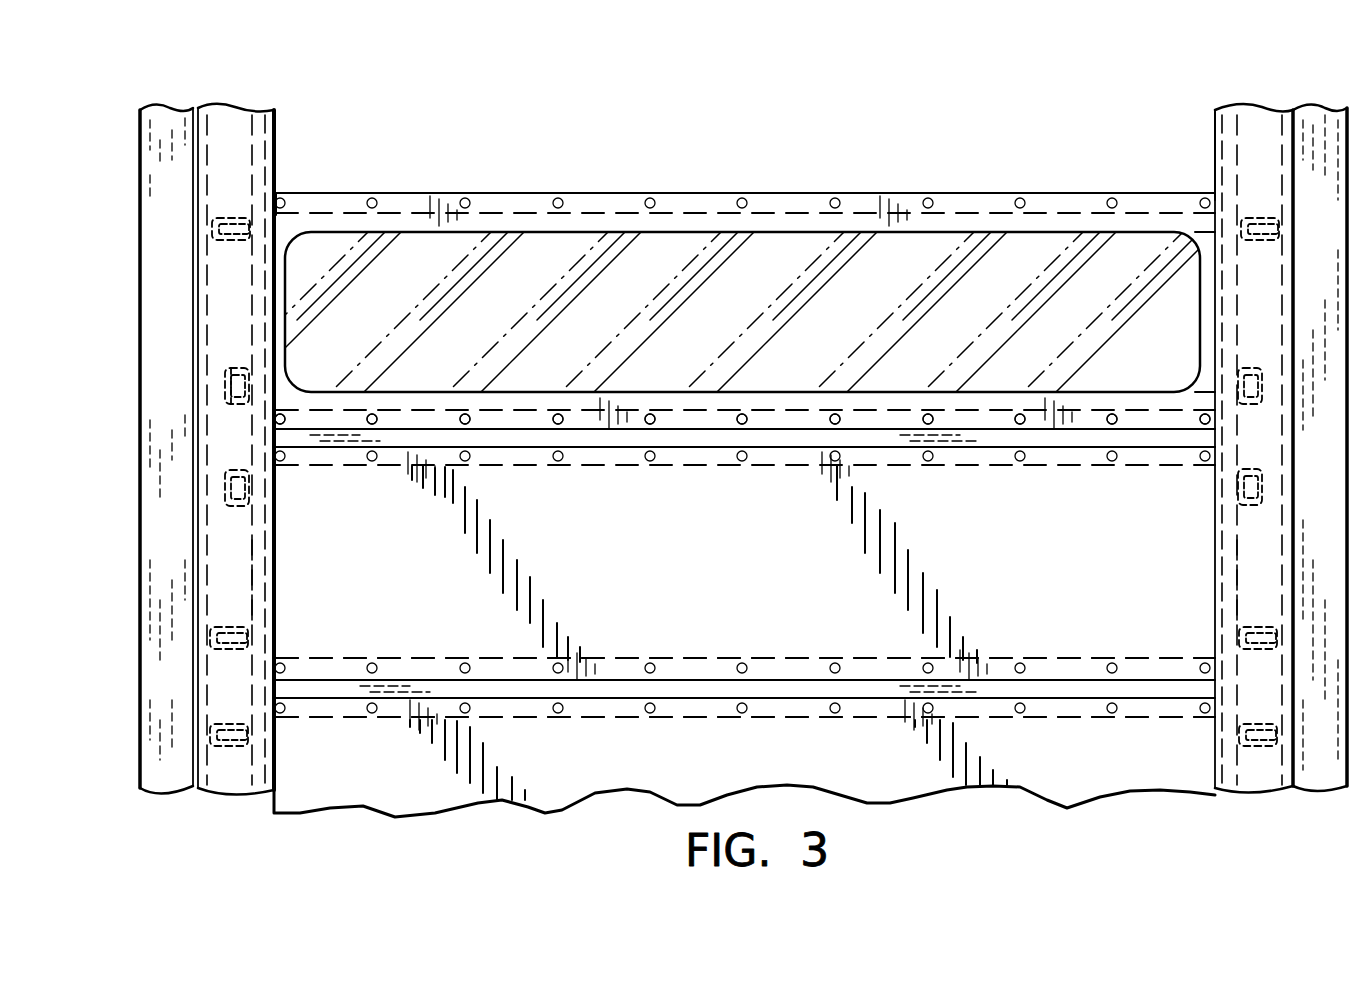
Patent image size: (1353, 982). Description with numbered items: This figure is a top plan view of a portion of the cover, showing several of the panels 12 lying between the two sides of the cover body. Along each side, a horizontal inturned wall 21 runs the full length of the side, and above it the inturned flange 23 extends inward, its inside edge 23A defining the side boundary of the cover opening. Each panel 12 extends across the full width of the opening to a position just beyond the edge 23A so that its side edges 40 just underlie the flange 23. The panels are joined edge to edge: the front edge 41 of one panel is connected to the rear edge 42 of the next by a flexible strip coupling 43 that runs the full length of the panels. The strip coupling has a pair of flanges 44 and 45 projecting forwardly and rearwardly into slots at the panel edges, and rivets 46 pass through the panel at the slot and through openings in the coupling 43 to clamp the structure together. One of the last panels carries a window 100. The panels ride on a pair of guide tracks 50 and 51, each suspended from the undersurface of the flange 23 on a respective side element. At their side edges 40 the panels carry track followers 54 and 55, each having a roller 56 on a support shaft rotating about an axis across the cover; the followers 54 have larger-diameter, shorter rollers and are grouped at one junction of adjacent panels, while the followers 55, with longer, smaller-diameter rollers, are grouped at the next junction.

The panels 12 is at (711, 160).
The horizontal inturned wall 21 is at (163, 112).
The inturned flange 23 is at (232, 120).
The inside edge of the flange 23A is at (277, 123).
The side edges of the panel 40 is at (272, 592).
The front edge of the panel 41 is at (968, 435).
The rear edge of the panel 42 is at (1012, 192).
The flexible strip coupling 43 is at (510, 448).
The forward flange of the strip coupling 44 is at (875, 715).
The rearward flange of the strip coupling 45 is at (868, 668).
The rivets 46 is at (465, 415).
The guide track 50 is at (266, 155).
The guide track 51 is at (1226, 157).
The track follower 54 is at (262, 375).
The track follower 55 is at (232, 248).
The roller 56 is at (235, 388).
The window 100 is at (606, 242).